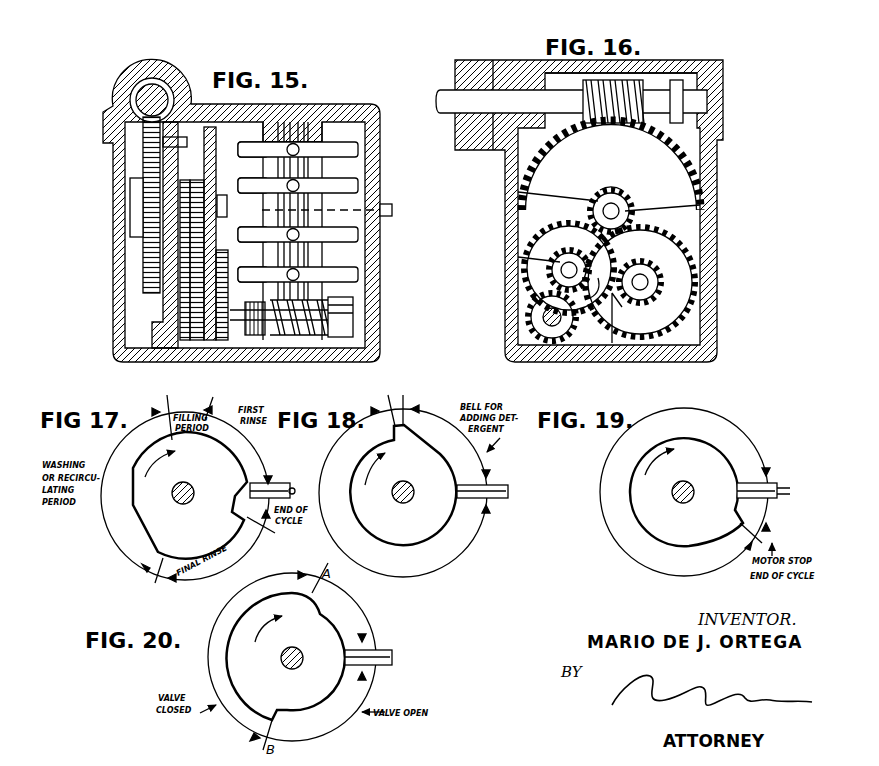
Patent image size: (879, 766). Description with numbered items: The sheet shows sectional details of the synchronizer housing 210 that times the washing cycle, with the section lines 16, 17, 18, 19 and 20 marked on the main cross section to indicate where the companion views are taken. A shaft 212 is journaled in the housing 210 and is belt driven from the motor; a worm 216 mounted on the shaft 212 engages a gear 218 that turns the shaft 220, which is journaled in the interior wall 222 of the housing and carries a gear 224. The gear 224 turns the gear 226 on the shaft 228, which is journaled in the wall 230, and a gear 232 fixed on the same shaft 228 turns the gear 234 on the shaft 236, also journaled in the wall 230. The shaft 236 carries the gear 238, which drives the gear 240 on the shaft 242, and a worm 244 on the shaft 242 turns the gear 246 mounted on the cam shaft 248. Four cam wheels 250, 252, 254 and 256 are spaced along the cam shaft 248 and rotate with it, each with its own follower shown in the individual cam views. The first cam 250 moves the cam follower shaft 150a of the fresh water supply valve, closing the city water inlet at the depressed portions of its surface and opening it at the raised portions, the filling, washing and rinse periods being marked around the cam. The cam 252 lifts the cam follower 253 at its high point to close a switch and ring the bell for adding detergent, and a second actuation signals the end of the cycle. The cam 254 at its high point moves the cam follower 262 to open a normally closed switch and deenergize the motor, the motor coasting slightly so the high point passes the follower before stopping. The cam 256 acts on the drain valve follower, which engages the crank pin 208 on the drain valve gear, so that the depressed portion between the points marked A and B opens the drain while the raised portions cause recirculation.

In FIG. 15, the section line 16— 16 is at (148, 18).
In FIG. 15, the section line 17— 17 is at (83, 140).
In FIG. 15, the section line 18— 18 is at (83, 175).
In FIG. 15, the section line 19— 19 is at (83, 225).
In FIG. 15, the section line 20— 20 is at (83, 264).
In FIG. 17, the cam follower shaft 150a is at (292, 488).
In FIG. 20, the crank pin 208 is at (388, 650).
In FIG. 15, the synchronizer housing 210 is at (378, 357).
In FIG. 16, the synchronizer housing 210 is at (718, 312).
In FIG. 15, the shaft 212 is at (160, 90).
In FIG. 16, the shaft 212 is at (571, 101).
In FIG. 15, the worm 216 is at (136, 100).
In FIG. 16, the worm 216 is at (636, 72).
In FIG. 15, the gear 218 is at (147, 287).
In FIG. 16, the gear 218 is at (623, 155).
In FIG. 15, the shaft 220 is at (256, 185).
In FIG. 16, the shaft 220 is at (620, 212).
In FIG. 15, the interior wall 222 is at (172, 341).
In FIG. 15, the gear 224 is at (216, 190).
In FIG. 16, the gear 224 is at (608, 190).
In FIG. 15, the gear 226 is at (183, 341).
In FIG. 16, the gear 226 is at (653, 249).
In FIG. 16, the shaft 228 is at (646, 282).
In FIG. 15, the wall 230 is at (256, 149).
In FIG. 16, the wall 230 is at (580, 248).
In FIG. 16, the gear 232 is at (637, 318).
In FIG. 15, the gear 234 is at (197, 341).
In FIG. 16, the shaft 236 is at (568, 271).
In FIG. 15, the gear 238 is at (256, 234).
In FIG. 16, the gear 238 is at (591, 292).
In FIG. 15, the gear 240 is at (256, 274).
In FIG. 16, the gear 240 is at (566, 320).
In FIG. 16, the shaft 242 is at (543, 317).
In FIG. 15, the worm 244 is at (289, 338).
In FIG. 17, the gear 246 is at (178, 504).
In FIG. 19, the gear 246 is at (678, 500).
In FIG. 20, the gear 246 is at (285, 667).
In FIG. 15, the cam shaft 248 is at (327, 113).
In FIG. 18, the cam shaft 248 is at (424, 480).
In FIG. 15, the first cam wheel 250 is at (298, 149).
In FIG. 17, the first cam wheel 250 is at (215, 466).
In FIG. 15, the cam wheel 252 is at (298, 185).
In FIG. 18, the cam wheel 252 is at (420, 455).
In FIG. 18, the cam follower 253 is at (505, 487).
In FIG. 15, the cam wheel 254 is at (298, 234).
In FIG. 19, the cam wheel 254 is at (711, 469).
In FIG. 15, the cam wheel 256 is at (298, 274).
In FIG. 20, the cam wheel 256 is at (322, 637).
In FIG. 19, the cam follower 262 is at (770, 485).